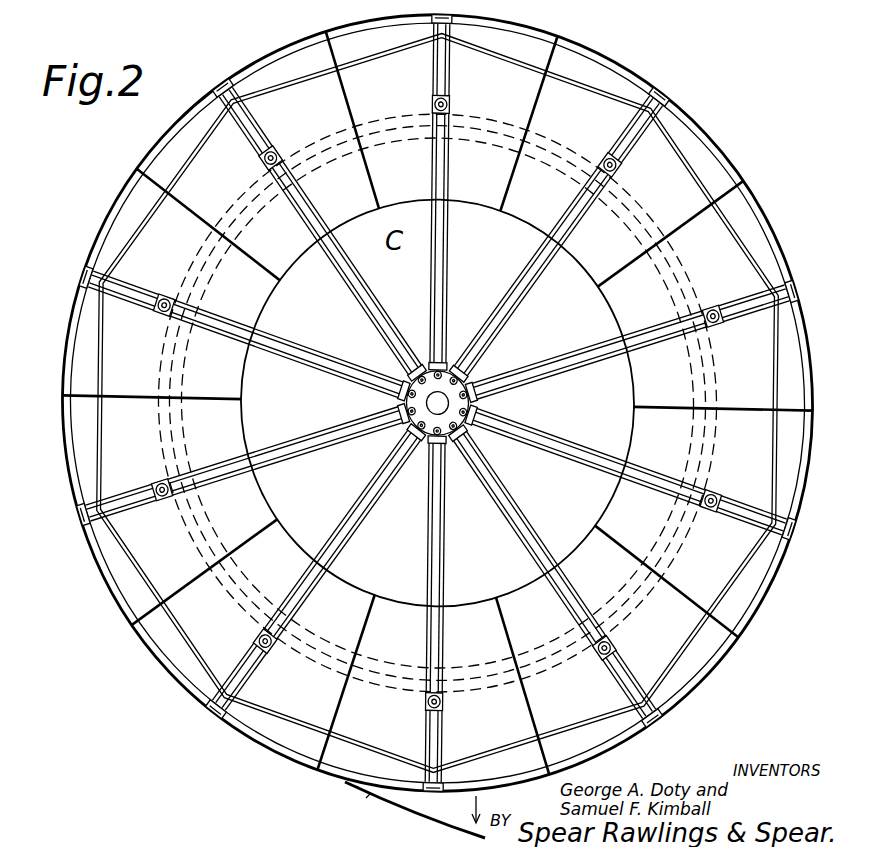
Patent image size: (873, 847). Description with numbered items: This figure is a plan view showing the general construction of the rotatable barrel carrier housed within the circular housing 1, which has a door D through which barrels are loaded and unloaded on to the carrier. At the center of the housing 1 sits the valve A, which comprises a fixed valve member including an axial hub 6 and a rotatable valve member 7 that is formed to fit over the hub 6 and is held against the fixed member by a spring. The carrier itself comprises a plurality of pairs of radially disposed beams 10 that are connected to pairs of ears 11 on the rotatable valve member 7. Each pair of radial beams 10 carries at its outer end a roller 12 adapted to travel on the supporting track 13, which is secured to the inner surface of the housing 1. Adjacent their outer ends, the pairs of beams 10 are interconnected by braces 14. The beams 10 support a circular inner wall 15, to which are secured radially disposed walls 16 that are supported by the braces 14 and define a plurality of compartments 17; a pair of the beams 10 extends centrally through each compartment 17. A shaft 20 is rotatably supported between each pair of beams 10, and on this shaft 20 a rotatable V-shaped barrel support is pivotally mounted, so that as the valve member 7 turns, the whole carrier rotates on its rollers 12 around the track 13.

The circular housing 1 is at (115, 196).
The axial hub 6 is at (465, 420).
The rotatable valve member 7 is at (426, 372).
The radially disposed beams 10 is at (447, 292).
The ears 11 is at (405, 397).
The roller 12 is at (88, 280).
The supporting track 13 is at (84, 305).
The braces 14 is at (185, 197).
The circular inner wall 15 is at (243, 393).
The radially disposed walls 16 is at (210, 230).
The compartments 17 is at (434, 403).
The shaft 20 is at (434, 105).
The valve A is at (455, 404).
The door D is at (403, 802).